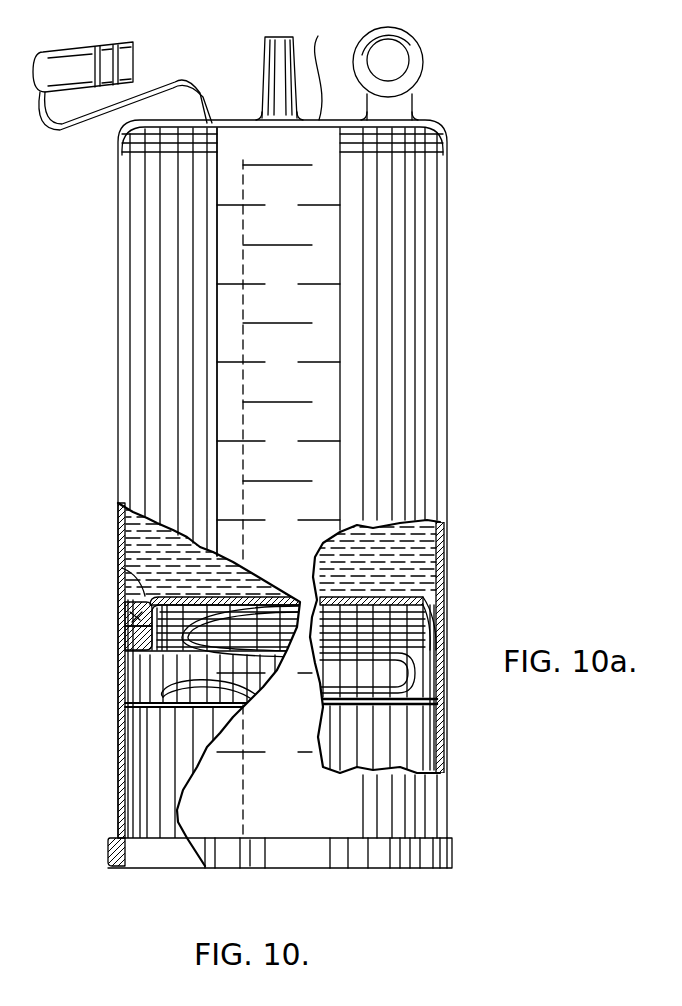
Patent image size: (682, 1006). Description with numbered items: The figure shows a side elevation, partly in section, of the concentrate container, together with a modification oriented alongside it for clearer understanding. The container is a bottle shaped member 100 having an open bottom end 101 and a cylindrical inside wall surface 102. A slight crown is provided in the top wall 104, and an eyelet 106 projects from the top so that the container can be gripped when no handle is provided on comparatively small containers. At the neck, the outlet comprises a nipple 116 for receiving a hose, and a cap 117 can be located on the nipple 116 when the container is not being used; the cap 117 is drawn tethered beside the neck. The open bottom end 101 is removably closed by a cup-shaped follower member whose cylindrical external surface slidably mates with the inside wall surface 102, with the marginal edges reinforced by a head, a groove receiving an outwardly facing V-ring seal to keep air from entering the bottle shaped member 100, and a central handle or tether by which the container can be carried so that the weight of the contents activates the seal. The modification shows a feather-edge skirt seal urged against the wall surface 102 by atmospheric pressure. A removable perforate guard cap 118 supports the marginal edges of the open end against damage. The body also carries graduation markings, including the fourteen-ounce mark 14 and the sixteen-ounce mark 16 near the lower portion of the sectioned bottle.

The bottle shaped member 100 is at (456, 265).
The open bottom end 101 is at (118, 826).
The cylindrical inside wall surface 102 is at (120, 503).
The top wall 104 is at (318, 36).
The eyelet 106 is at (413, 72).
The nipple 116 is at (277, 68).
The cap 117 is at (85, 60).
The removable perforate guard cap 118 is at (115, 862).
The 14-ounce graduation mark 14 is at (264, 674).
The 16-ounce graduation mark 16 is at (264, 753).